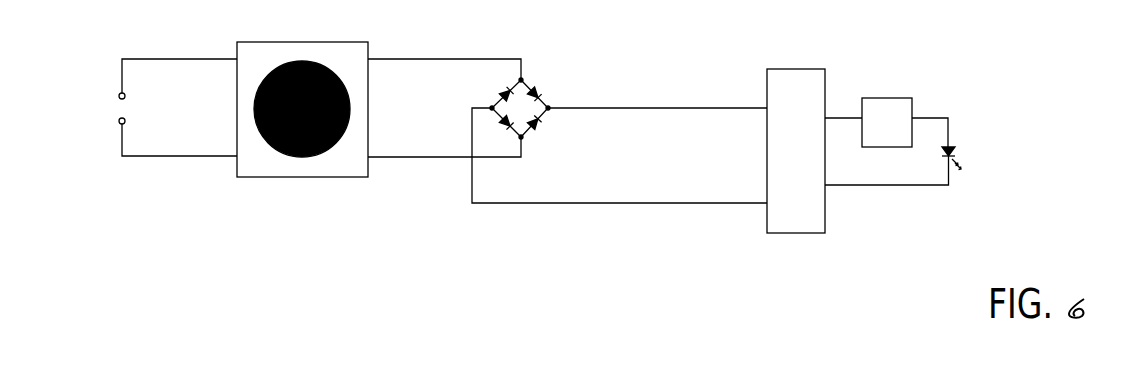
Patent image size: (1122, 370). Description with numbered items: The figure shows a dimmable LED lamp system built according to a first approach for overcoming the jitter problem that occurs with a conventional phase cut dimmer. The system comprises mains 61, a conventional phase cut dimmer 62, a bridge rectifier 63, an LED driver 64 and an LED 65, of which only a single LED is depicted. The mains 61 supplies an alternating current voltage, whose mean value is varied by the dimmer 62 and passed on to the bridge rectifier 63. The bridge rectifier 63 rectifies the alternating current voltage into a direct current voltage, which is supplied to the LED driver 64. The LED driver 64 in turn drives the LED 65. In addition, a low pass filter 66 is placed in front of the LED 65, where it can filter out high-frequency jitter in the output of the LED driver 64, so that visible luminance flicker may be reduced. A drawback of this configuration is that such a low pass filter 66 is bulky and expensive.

The mains 61 is at (169, 107).
The conventional phase cut dimmer 62 is at (302, 109).
The bridge rectifier 63 is at (567, 131).
The LED driver 64 is at (796, 151).
The LED 65 is at (893, 151).
The low pass filter 66 is at (868, 122).